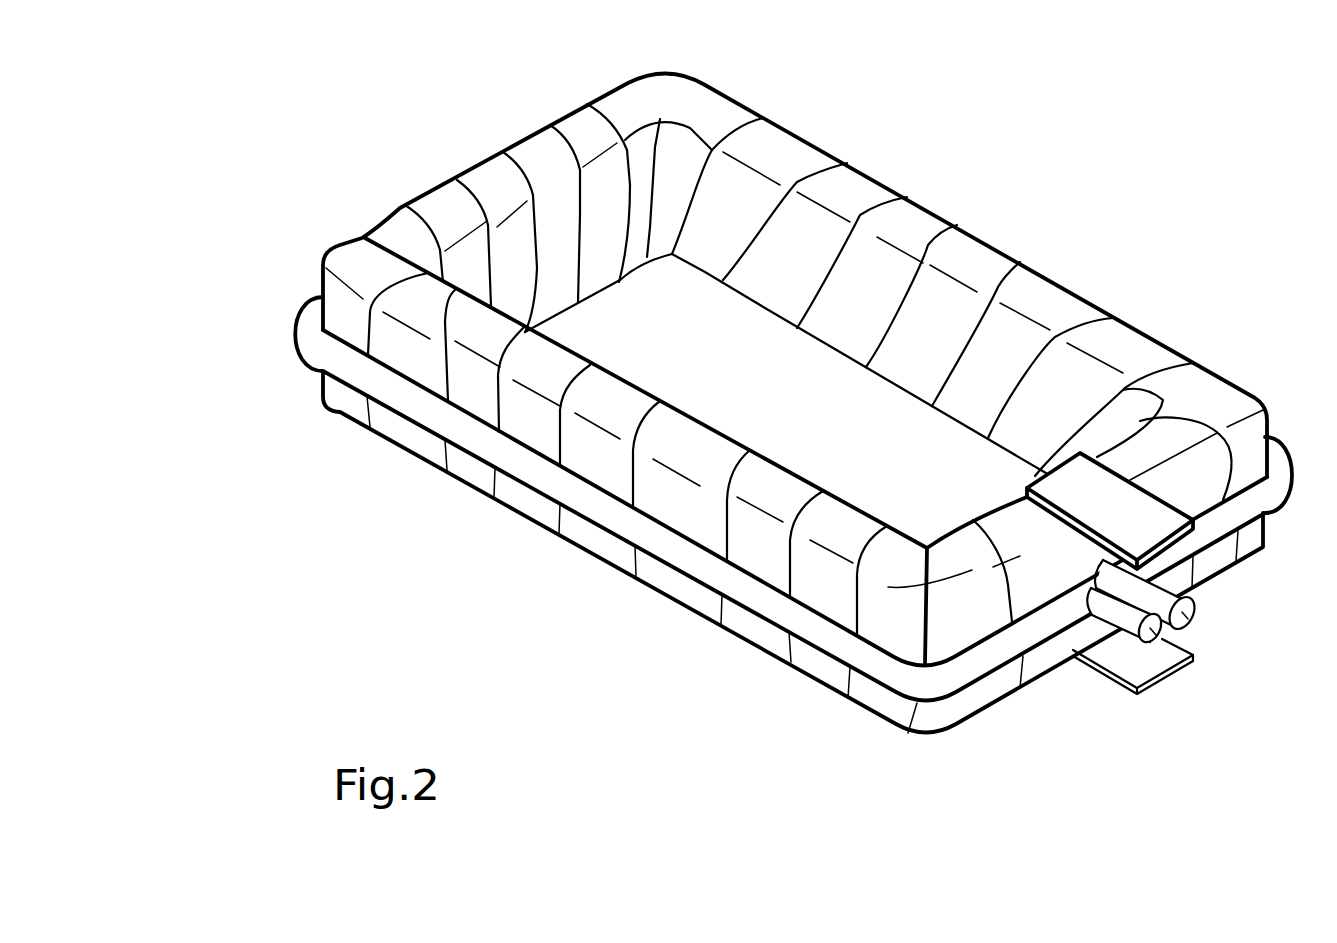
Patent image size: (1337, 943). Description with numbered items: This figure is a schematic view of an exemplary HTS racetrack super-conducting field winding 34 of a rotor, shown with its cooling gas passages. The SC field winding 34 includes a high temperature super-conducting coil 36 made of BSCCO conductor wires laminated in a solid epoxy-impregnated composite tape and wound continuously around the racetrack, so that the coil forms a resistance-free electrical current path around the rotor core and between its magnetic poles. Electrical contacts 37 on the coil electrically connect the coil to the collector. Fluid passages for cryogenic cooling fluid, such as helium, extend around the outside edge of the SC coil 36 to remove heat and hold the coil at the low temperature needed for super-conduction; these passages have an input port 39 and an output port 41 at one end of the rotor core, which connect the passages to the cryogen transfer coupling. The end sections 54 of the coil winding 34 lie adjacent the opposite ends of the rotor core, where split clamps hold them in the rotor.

The racetrack SC field winding 34 is at (468, 97).
The high temperature super-conducting coil 36 is at (1037, 293).
The electrical contacts 37 is at (1135, 525).
The input port 39 is at (1195, 620).
The output port 41 is at (1190, 663).
The end sections 54 is at (400, 216).